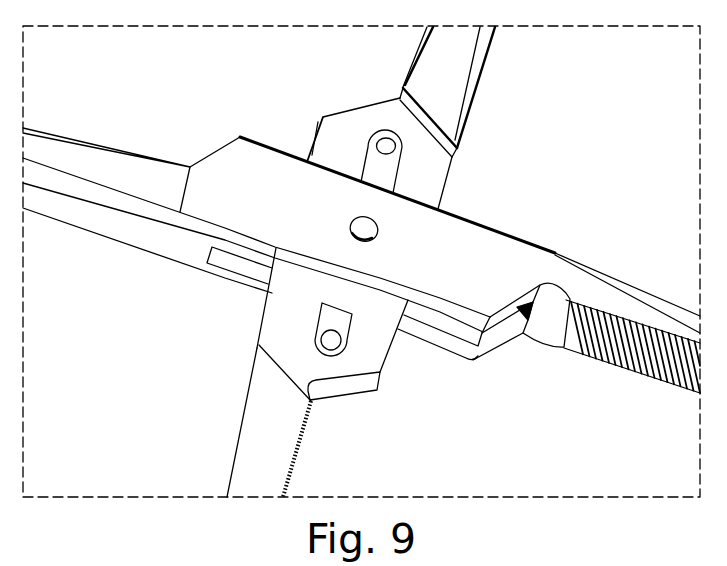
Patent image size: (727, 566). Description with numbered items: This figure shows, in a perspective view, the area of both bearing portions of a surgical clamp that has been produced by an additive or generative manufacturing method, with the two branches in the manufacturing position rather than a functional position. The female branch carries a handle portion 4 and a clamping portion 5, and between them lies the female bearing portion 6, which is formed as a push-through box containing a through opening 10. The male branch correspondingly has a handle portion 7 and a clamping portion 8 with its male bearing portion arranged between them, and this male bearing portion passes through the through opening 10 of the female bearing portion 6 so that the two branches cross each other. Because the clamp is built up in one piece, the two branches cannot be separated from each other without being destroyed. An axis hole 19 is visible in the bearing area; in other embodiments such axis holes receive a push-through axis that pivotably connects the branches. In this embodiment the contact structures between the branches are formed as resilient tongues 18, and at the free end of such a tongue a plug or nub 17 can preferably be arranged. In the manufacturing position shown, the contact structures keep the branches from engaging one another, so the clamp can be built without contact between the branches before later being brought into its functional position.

The handle portion 4 is at (108, 163).
The clamping portion 5 is at (615, 302).
The female bearing portion 6 is at (396, 253).
The handle portion 7 is at (450, 70).
The clamping portion 8 is at (285, 433).
The through opening 10 is at (437, 325).
The nub 17 is at (340, 343).
The resilient tongue 18 is at (383, 167).
The axis hole 19 is at (352, 226).